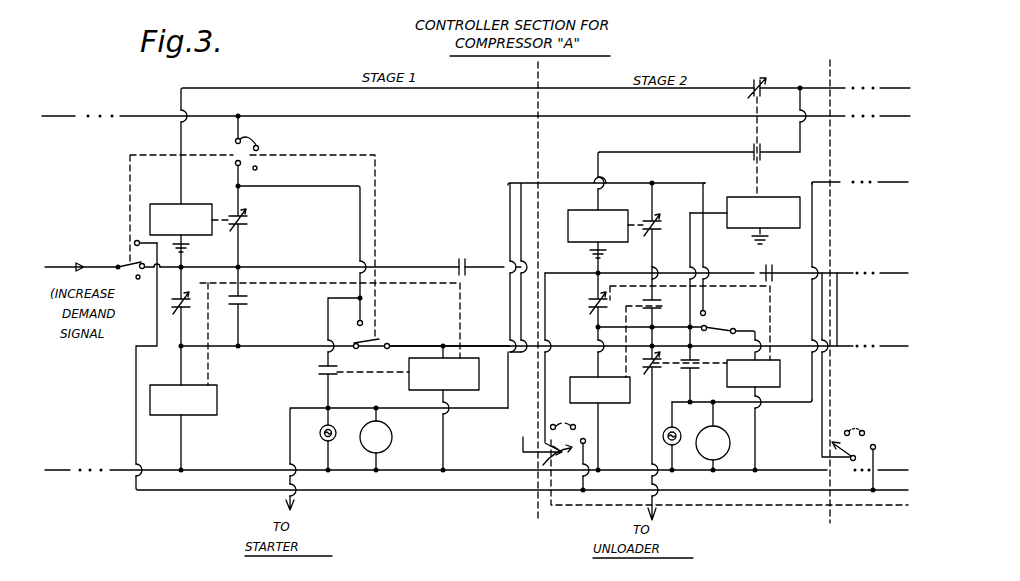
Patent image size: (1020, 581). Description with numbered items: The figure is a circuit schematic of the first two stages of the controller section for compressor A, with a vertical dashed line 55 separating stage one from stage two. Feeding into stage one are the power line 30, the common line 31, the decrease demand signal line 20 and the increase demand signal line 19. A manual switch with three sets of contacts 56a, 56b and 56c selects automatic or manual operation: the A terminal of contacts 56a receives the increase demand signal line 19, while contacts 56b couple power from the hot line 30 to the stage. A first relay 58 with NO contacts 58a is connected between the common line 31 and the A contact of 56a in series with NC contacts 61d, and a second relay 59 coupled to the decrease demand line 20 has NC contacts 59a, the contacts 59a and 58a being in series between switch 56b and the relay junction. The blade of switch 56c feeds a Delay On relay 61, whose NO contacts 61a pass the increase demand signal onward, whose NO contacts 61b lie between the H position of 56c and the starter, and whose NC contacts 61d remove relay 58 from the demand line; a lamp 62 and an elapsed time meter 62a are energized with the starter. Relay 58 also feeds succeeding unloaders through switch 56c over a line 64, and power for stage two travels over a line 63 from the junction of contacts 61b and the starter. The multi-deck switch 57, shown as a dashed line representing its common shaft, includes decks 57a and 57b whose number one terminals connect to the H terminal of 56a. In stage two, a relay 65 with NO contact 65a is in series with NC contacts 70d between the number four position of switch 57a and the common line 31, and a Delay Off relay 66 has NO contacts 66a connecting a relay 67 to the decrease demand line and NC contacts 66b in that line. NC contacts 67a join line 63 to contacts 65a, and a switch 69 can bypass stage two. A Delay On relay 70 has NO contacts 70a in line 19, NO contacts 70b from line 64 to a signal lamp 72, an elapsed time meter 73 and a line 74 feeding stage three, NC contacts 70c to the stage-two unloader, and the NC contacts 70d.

The increase demand signal line 19 is at (58, 265).
The decrease demand signal line 20 is at (272, 87).
The power line 30 is at (135, 117).
The common line 31 is at (125, 467).
The vertical dashed line 55 is at (538, 518).
The contacts 56a is at (112, 255).
The contacts 56b is at (266, 140).
The switch 56c is at (383, 336).
The switch 57 is at (571, 509).
The switch 57a is at (536, 453).
The switch 57b is at (866, 454).
The first relay 58 is at (196, 415).
The NO contacts 58a is at (256, 306).
The second relay 59 is at (173, 200).
The NC contacts 59a is at (246, 228).
The Delay On relay 61 is at (345, 188).
The NO contacts 61a is at (462, 258).
The NO contacts 61b is at (320, 377).
The NC contacts 61d is at (192, 304).
The lamp 62 is at (334, 440).
The elapsed time meter 62a is at (393, 436).
The line 63 is at (522, 182).
The line 64 is at (488, 344).
The relay 65 is at (584, 376).
The NO contact 65a is at (661, 305).
The Delay Off relay 66 is at (783, 197).
The NO contacts 66a is at (752, 152).
The NC contacts 66b is at (770, 88).
The relay 67 is at (578, 209).
The NC contacts 67a is at (656, 216).
The switch 69 is at (728, 322).
The Delay On relay 70 is at (780, 385).
The NO contacts 70a is at (771, 265).
The NO contacts 70b is at (690, 307).
The NC contacts 70c is at (662, 423).
The NC contacts 70d is at (592, 310).
The signal lamp 72 is at (679, 430).
The elapsed time meter 73 is at (722, 433).
The line 74 is at (785, 404).